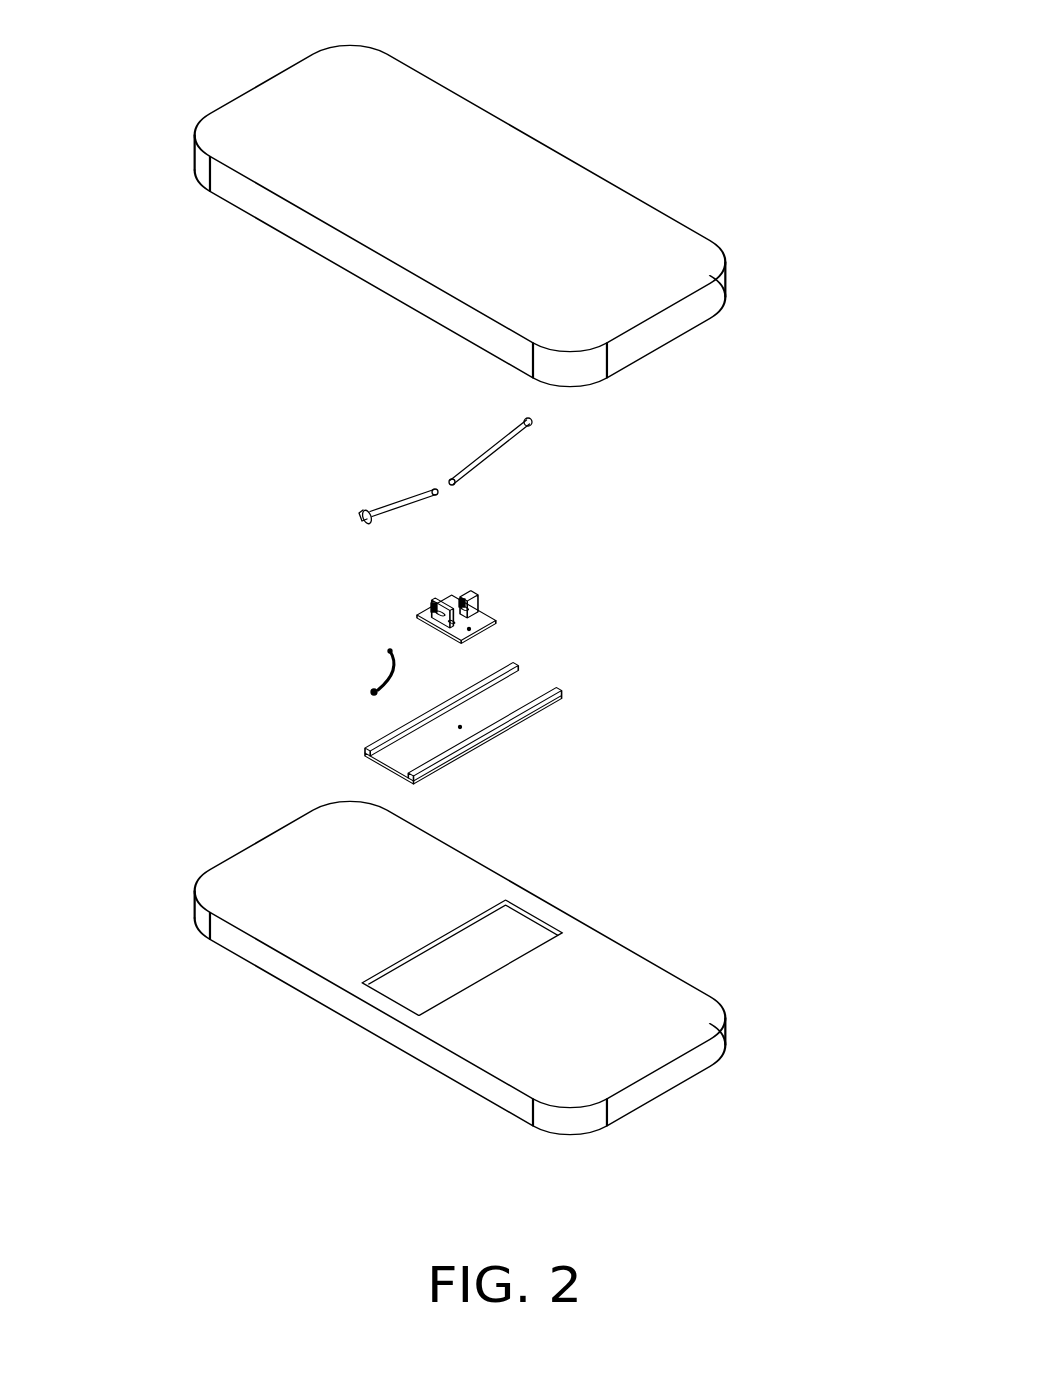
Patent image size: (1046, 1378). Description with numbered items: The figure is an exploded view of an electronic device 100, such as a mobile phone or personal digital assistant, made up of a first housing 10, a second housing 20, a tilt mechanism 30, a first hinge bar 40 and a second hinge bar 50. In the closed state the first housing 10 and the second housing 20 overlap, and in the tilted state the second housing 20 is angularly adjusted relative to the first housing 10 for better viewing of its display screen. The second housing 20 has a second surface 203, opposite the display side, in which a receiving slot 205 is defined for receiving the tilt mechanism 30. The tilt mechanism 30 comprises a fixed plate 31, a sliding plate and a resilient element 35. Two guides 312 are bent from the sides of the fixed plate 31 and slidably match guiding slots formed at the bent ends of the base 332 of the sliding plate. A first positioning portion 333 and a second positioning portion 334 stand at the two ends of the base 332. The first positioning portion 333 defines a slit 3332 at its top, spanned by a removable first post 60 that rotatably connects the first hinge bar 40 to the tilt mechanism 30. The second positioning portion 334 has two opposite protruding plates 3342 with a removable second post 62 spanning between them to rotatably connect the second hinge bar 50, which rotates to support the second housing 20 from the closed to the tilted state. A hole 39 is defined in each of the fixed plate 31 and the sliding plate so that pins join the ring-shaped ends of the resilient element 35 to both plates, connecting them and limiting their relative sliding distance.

The electronic device 100 is at (517, 33).
The first housing 10 is at (603, 217).
The second housing 20 is at (445, 968).
The second surface 203 is at (265, 888).
The receiving slot 205 is at (408, 980).
The tilt mechanism 30 is at (471, 580).
The fixed plate 31 is at (475, 728).
The guides 312 is at (507, 728).
The base 332 is at (483, 625).
The first positioning portion 333 is at (386, 599).
The slit 3332 is at (436, 616).
The second positioning portion 334 is at (516, 582).
The protruding plates 3342 is at (444, 603).
The resilient element 35 is at (383, 682).
The hole 39 is at (470, 630).
The first hinge bar 40 is at (410, 503).
The second hinge bar 50 is at (503, 440).
The first post 60 is at (433, 605).
The second post 62 is at (460, 600).